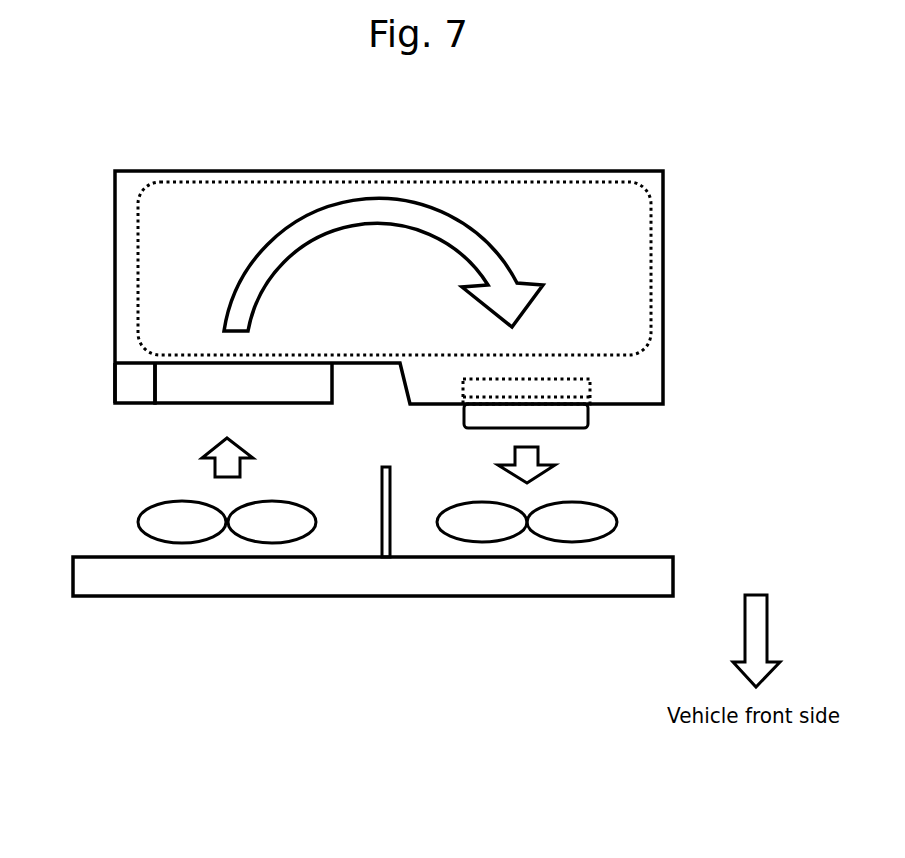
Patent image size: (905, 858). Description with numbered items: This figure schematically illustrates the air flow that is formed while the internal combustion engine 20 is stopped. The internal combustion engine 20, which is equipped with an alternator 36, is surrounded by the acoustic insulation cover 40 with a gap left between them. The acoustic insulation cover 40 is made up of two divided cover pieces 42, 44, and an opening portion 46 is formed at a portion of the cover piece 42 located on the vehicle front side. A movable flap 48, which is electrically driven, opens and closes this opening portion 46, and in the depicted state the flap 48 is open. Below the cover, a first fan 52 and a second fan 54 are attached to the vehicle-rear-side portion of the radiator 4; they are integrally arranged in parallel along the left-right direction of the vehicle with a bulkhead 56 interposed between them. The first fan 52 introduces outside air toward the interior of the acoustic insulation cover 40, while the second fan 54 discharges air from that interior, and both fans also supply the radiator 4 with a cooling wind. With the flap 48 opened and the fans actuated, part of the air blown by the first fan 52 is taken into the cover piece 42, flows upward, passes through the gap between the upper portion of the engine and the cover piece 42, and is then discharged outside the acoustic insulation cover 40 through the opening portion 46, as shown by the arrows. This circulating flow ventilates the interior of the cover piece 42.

The radiator 4 is at (618, 596).
The internal combustion engine 20 is at (652, 185).
The alternator 36 is at (187, 403).
The acoustic insulation cover 40 is at (387, 294).
The cover piece 42 is at (142, 170).
The cover piece 44 is at (115, 385).
The opening portion 46 is at (590, 405).
The flap 48 is at (572, 430).
The first fan 52 is at (298, 503).
The second fan 54 is at (615, 517).
The bulkhead 56 is at (390, 518).